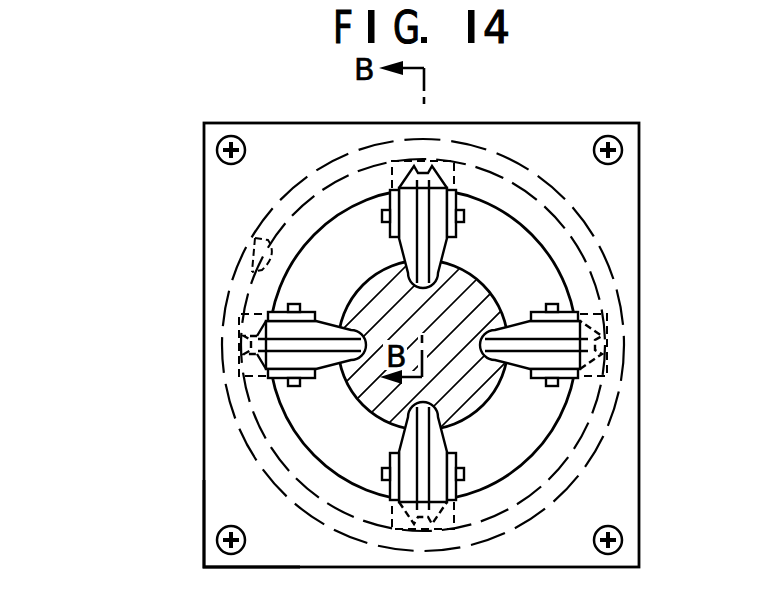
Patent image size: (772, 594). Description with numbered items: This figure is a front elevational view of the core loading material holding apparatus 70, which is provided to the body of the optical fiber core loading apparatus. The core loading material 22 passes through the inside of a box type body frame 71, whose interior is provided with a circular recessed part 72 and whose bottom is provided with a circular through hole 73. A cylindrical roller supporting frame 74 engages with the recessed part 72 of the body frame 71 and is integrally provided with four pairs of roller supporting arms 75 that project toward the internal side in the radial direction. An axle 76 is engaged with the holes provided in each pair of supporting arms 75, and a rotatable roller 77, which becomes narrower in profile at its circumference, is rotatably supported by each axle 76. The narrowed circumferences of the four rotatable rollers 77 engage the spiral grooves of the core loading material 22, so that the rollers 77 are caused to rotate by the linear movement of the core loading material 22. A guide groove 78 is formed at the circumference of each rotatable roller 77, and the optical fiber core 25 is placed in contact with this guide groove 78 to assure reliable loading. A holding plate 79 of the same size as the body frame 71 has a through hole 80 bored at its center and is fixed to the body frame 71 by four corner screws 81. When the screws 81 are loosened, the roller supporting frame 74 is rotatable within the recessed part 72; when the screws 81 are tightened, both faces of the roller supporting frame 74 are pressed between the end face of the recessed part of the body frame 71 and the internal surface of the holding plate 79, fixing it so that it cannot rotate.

The core loading material holding apparatus 70 is at (40, 296).
The body frame 71 is at (218, 447).
The circular recessed part 72 is at (252, 270).
The circular through hole 73 is at (332, 235).
The roller supporting frame 74 is at (587, 222).
The roller supporting arms 75 is at (562, 382).
The axle 76 is at (543, 304).
The rotatable roller 77 is at (565, 330).
The guide groove 78 is at (364, 334).
The holding plate 79 is at (218, 488).
The through hole 80 is at (290, 402).
The screws 81 is at (216, 540).
The core loading material 22 is at (483, 383).
The optical fiber core 25 is at (442, 270).